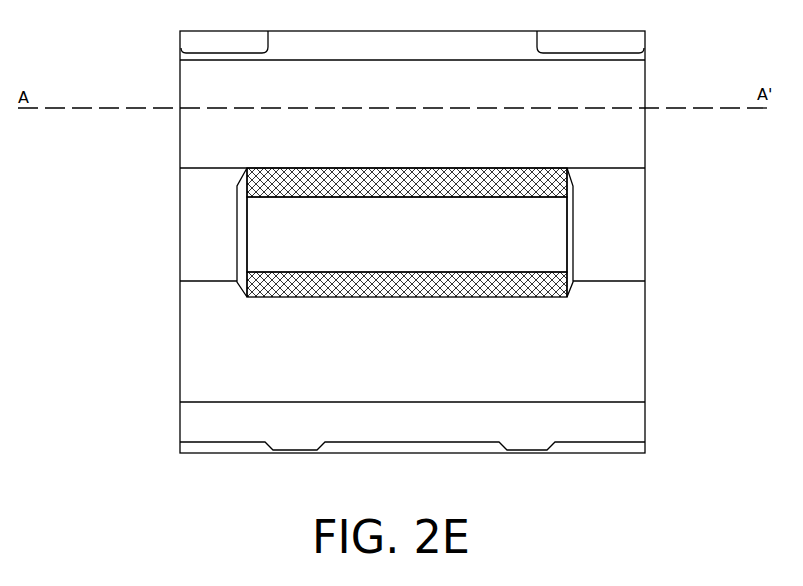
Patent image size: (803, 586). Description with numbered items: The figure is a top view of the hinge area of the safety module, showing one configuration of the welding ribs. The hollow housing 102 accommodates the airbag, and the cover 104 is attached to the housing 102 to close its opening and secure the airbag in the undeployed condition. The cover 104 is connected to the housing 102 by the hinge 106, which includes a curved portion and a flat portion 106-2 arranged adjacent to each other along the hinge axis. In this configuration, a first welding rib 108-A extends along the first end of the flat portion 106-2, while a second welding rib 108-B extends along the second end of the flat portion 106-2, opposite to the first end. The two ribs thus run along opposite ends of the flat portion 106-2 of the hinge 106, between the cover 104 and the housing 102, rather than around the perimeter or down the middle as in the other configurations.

The housing 102 is at (203, 378).
The cover 104 is at (201, 101).
The hinge 106 is at (338, 257).
The flat portion 106-2 is at (258, 247).
The first welding rib 108-A is at (283, 186).
The second welding rib 108-B is at (265, 283).